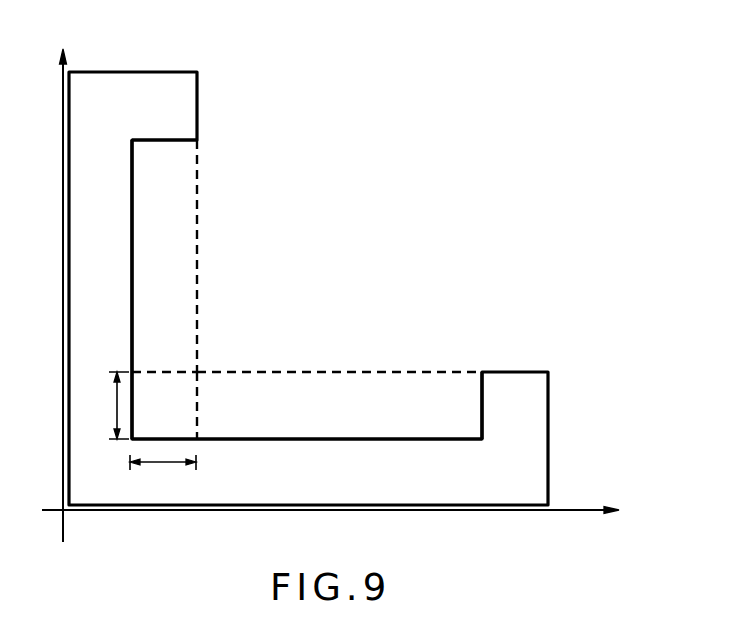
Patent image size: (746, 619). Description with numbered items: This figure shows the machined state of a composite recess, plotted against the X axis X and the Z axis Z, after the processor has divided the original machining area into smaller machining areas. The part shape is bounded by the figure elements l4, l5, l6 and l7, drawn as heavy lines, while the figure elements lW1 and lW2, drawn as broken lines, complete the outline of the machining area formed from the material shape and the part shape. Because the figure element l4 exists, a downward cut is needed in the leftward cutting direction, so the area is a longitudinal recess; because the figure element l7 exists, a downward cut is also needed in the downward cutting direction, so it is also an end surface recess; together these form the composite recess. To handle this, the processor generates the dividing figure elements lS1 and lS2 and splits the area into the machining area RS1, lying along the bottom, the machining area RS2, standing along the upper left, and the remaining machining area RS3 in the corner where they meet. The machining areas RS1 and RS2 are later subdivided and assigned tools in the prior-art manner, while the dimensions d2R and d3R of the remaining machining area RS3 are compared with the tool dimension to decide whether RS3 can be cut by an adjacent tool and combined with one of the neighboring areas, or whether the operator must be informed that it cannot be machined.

The X axis X is at (51, 295).
The Z axis Z is at (341, 516).
The figure element l7 is at (164, 127).
The figure element lw2 lW2 is at (217, 256).
The figure element l6 is at (119, 289).
The figure element ls2 lS2 is at (150, 370).
The figure element lw1 lW1 is at (339, 359).
The figure element ls1 lS1 is at (198, 404).
The figure element l4 is at (494, 405).
The figure element l5 is at (307, 453).
The machining area Rs1 RS1 is at (339, 405).
The machining area Rs2 RS2 is at (164, 256).
The machining area Rs3 RS3 is at (164, 405).
The dimension d3R is at (101, 405).
The dimension d2R is at (163, 474).